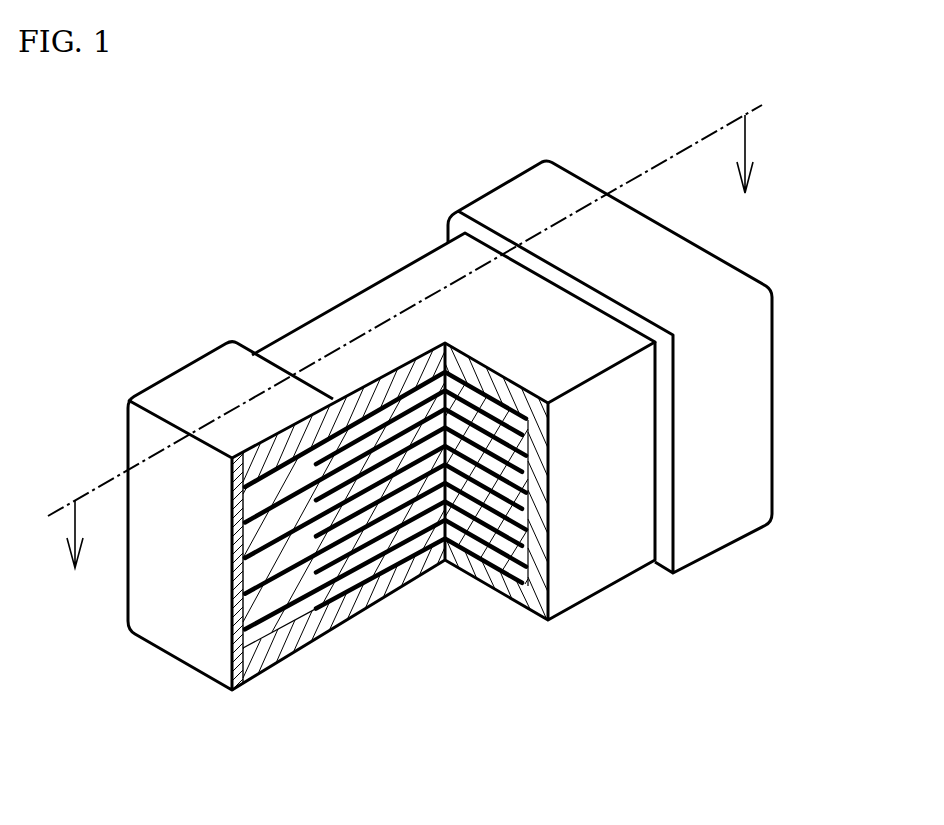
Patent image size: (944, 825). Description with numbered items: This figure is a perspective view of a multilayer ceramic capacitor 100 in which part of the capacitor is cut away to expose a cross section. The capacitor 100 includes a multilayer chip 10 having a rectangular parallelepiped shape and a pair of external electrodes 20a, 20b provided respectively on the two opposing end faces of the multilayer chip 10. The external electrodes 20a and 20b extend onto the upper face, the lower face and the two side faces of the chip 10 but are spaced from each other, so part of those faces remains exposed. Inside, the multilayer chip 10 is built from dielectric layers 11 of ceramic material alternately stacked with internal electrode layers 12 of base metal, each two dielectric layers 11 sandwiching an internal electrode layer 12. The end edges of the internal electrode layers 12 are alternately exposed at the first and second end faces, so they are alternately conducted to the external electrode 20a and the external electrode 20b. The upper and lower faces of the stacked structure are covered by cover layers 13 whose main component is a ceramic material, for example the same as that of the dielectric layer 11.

The multilayer ceramic capacitor 100 is at (877, 87).
The multilayer chip 10 is at (273, 325).
The dielectric layer 11 is at (370, 550).
The internal electrode layer 12 is at (335, 585).
The cover layer 13 is at (413, 280).
The external electrode 20a is at (158, 382).
The external electrode 20b is at (507, 200).